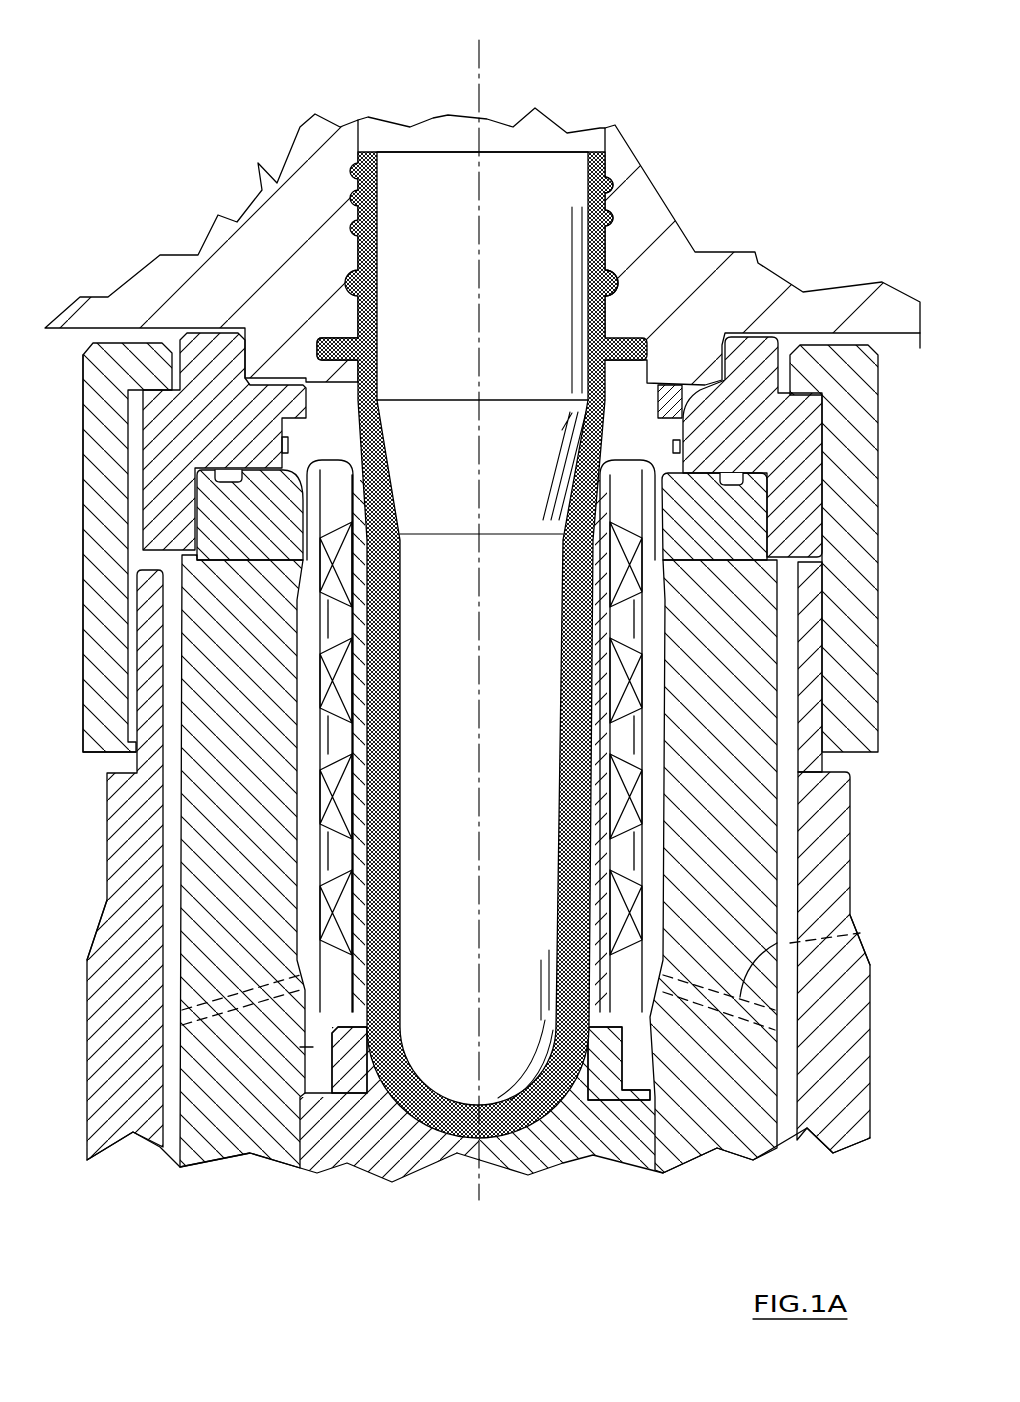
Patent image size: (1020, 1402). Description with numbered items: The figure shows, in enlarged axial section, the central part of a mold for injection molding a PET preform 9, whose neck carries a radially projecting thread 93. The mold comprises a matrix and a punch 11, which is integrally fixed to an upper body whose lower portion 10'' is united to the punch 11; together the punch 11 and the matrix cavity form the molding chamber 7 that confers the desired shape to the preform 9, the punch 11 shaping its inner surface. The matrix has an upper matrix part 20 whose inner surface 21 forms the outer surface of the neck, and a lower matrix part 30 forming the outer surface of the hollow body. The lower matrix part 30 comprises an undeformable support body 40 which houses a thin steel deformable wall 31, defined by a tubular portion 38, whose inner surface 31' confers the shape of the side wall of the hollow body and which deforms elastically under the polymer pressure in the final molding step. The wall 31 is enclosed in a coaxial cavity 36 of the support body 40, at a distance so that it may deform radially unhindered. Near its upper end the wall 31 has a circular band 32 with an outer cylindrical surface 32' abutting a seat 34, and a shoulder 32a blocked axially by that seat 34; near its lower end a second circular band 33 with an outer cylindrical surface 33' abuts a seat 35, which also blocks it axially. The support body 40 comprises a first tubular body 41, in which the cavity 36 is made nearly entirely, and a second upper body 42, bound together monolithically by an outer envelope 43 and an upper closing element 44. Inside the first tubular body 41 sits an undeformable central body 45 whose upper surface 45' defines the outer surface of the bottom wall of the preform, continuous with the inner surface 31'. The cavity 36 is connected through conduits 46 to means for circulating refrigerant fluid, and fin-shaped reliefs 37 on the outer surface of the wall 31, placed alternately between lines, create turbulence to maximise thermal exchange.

The lower portion 10'' is at (420, 71).
The upper matrix part 20 is at (277, 183).
The inner surface 21 is at (375, 308).
The thread 93 is at (607, 307).
The preform 9 is at (695, 252).
The molding chamber 7 is at (386, 878).
The upper closing element 44 is at (83, 367).
The lower matrix part 30 is at (81, 608).
The circular band 32 is at (221, 352).
The outer cylindrical surface 32' is at (602, 419).
The shoulder 32a is at (682, 385).
The second upper body 42 is at (768, 352).
The reliefs 37 is at (318, 803).
The support body 40 is at (178, 975).
The first tubular body 41 is at (753, 1077).
The deformable wall 31 is at (201, 865).
The inner surface 31' is at (753, 667).
The coaxial cavity 36 is at (645, 863).
The conduits 46 is at (180, 933).
The seat 34 is at (325, 467).
The tubular portion 38 is at (598, 805).
The punch 11 is at (317, 1045).
The seat 35 is at (353, 1080).
The second circular band 33 is at (238, 1124).
The outer cylindrical surface 33' is at (746, 1104).
The outer envelope 43 is at (85, 1087).
The central body 45 is at (389, 1147).
The upper surface 45' is at (567, 1151).